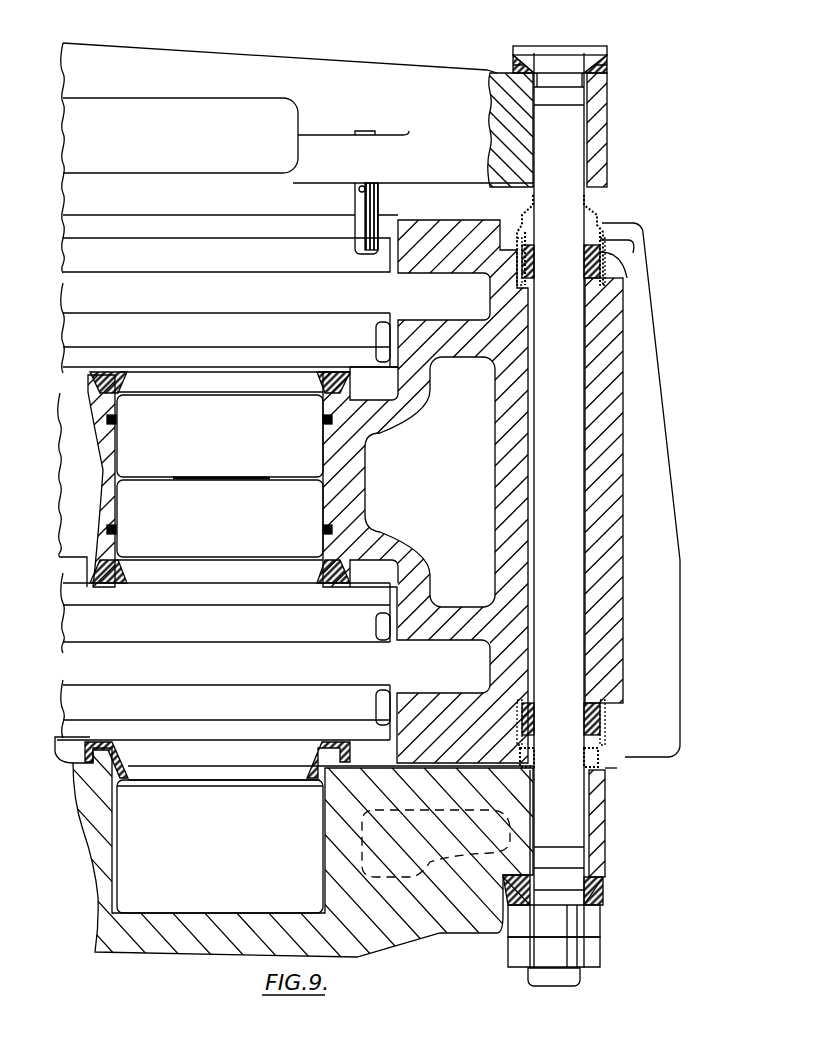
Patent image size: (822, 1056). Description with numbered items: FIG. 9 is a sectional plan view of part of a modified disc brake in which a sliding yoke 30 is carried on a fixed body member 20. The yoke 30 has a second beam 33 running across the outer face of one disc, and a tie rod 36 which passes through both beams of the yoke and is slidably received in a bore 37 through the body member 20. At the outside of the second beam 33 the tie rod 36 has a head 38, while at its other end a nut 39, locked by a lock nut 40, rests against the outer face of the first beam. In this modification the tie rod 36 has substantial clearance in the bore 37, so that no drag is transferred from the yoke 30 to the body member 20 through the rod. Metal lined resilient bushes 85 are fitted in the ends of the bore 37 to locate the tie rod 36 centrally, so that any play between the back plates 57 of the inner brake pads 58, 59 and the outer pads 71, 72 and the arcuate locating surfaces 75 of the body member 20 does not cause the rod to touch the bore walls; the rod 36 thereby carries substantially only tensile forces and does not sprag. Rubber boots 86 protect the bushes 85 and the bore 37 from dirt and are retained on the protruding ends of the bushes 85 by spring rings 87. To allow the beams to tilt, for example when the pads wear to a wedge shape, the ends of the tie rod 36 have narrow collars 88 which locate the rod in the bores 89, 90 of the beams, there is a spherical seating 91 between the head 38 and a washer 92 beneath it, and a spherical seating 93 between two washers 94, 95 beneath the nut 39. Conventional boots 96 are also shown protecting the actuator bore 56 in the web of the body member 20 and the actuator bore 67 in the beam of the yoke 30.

The body member 20 is at (612, 769).
The yoke 30 is at (605, 812).
The second beam 33 is at (458, 70).
The tie rod 36 is at (571, 492).
The bore 37 is at (535, 407).
The head 38 is at (590, 35).
The nut 39 is at (600, 923).
The lock nut 40 is at (600, 955).
The bore 56 is at (312, 460).
The back plate 57 is at (307, 227).
The inner brake pad 58 is at (285, 642).
The inner brake pad 59 is at (212, 272).
The bore 67 is at (318, 863).
The outer pad 71 is at (250, 690).
The outer pad 72 is at (255, 233).
The arcuate locating surface 75 is at (397, 222).
The resilient bush 85 is at (610, 258).
The rubber boot 86 is at (594, 210).
The spring ring 87 is at (600, 245).
The collar 88 is at (583, 98).
The bore 89 is at (534, 812).
The bore 90 is at (586, 146).
The spherical seating 91 is at (598, 75).
The washer 92 is at (603, 80).
The spherical seating 93 is at (603, 890).
The washer 94 is at (603, 905).
The washer 95 is at (598, 888).
The boot 96 is at (123, 383).